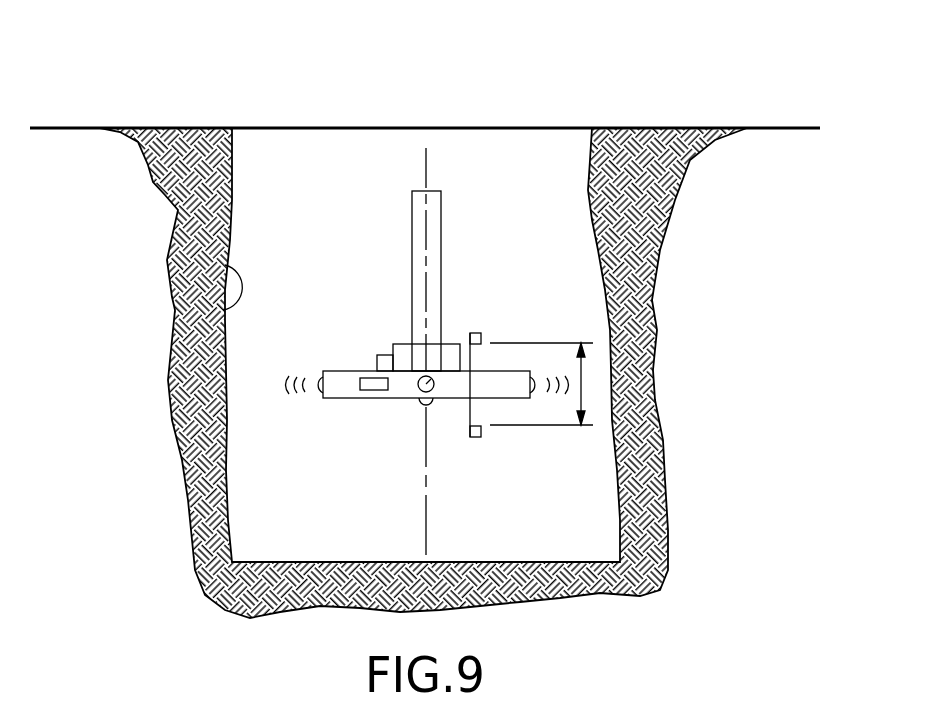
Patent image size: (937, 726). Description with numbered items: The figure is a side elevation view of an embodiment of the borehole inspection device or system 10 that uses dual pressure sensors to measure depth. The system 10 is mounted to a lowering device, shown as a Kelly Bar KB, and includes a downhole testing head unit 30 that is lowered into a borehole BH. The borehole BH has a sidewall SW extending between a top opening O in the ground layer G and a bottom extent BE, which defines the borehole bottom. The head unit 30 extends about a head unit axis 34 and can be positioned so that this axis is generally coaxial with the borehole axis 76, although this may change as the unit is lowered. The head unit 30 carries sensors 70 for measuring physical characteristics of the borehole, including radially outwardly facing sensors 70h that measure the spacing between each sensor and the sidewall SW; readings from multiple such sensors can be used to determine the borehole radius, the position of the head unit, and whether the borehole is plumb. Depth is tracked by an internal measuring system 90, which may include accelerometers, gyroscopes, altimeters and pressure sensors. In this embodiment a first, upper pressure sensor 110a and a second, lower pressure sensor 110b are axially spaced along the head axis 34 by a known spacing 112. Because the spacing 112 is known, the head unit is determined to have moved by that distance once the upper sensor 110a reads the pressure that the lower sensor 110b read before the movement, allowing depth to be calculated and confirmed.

The borehole inspection device or system 10 is at (533, 108).
The downhole testing head unit 30 is at (328, 426).
The head unit axis 34 is at (424, 171).
The sensors 70 is at (420, 398).
The radially outwardly facing sensors 70h is at (322, 388).
The borehole axis 76 is at (426, 525).
The internal measuring system 90 is at (372, 398).
The first pressure sensor 110a is at (478, 331).
The second pressure sensor 110b is at (478, 438).
The known spacing 112 is at (583, 365).
The borehole BH is at (265, 152).
The Kelly Bar KB is at (441, 218).
The top opening O is at (455, 148).
The sidewall SW is at (235, 309).
The ground layer G is at (312, 562).
The bottom extent BE is at (505, 562).